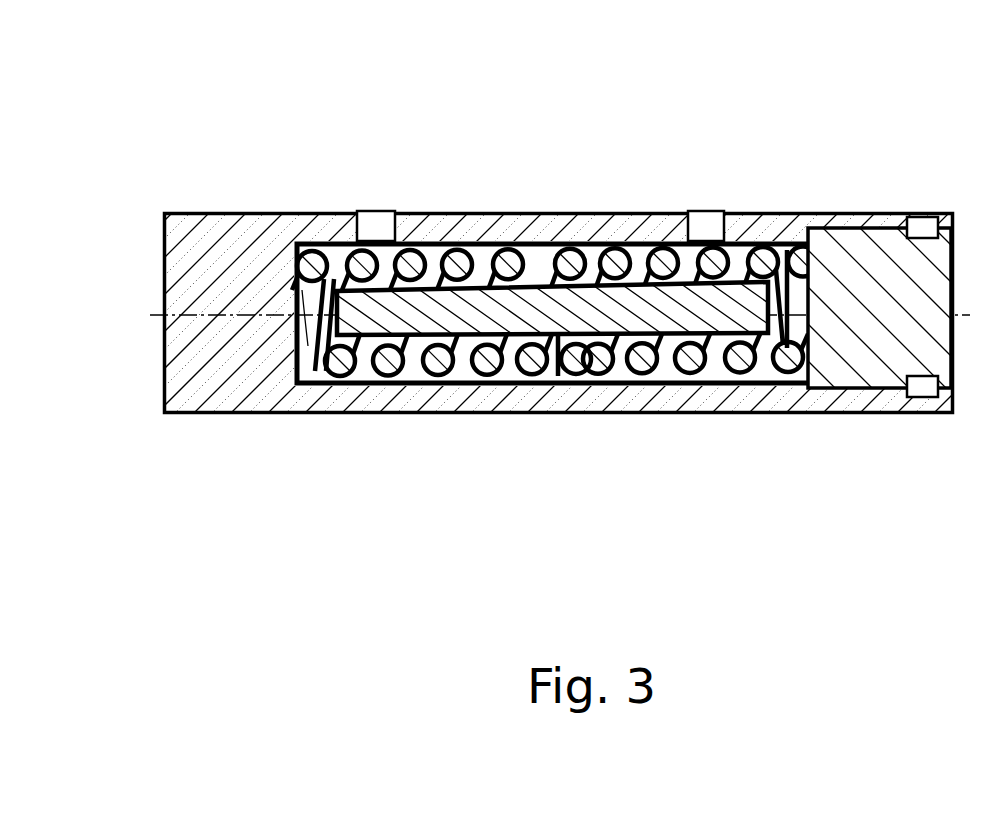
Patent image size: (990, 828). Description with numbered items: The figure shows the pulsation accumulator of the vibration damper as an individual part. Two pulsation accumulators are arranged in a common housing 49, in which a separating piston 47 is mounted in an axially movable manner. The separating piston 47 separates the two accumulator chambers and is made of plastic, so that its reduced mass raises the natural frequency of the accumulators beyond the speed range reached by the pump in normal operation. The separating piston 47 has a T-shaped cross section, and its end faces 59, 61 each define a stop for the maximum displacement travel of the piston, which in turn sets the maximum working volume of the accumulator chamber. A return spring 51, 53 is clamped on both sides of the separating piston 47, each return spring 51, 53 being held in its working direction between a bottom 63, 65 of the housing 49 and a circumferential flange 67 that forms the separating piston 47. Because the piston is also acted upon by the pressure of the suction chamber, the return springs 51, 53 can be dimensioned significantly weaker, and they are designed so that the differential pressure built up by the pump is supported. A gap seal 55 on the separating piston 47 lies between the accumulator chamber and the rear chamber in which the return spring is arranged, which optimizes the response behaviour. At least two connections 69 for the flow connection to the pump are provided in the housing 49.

The separating piston 47 is at (590, 378).
The housing 49 is at (313, 226).
The return spring 51 is at (659, 248).
The return spring 53 is at (406, 243).
The gap seal 55 is at (552, 385).
The end face 59 is at (840, 388).
The end face 61 is at (300, 385).
The bottom 63 is at (305, 327).
The bottom 65 is at (760, 248).
The circumferential flange 67 is at (549, 270).
The connection 69 is at (375, 236).